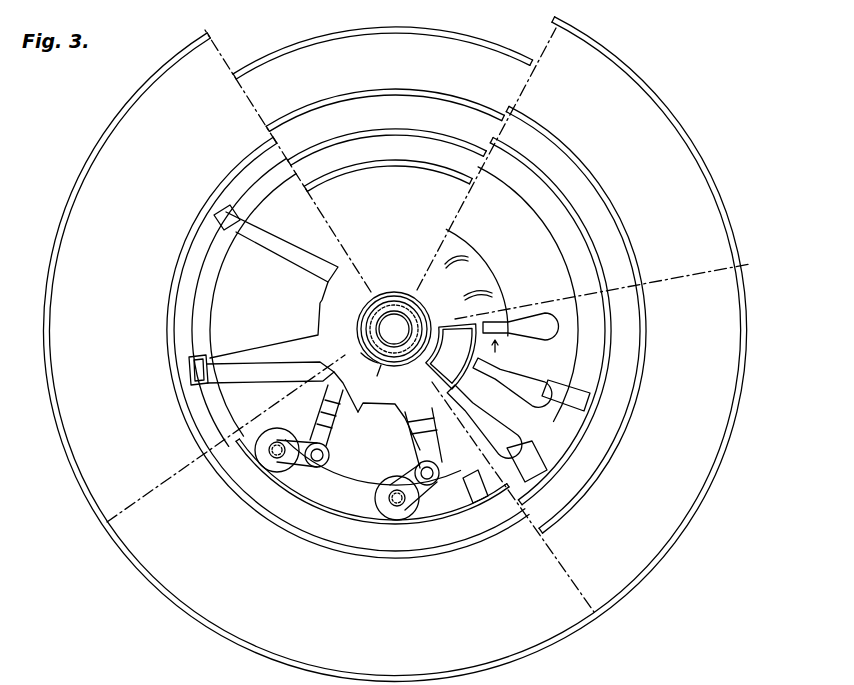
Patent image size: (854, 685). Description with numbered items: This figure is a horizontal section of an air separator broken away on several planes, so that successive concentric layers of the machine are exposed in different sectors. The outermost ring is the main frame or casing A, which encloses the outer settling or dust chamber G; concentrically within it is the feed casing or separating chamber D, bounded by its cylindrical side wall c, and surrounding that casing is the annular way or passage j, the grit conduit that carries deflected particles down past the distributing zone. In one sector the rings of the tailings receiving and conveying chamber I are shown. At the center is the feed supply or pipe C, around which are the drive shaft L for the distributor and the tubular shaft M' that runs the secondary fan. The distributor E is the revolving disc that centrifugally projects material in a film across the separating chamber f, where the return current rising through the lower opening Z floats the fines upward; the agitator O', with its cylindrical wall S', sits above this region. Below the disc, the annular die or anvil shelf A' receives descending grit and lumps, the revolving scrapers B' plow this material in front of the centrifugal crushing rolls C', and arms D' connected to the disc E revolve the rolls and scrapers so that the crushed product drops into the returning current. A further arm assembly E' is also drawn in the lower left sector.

The main frame or casing A is at (395, 349).
The tailings receiving and conveying chamber I is at (382, 125).
The outer settling or dust chamber G is at (589, 294).
The annular way or passage j is at (576, 319).
The cylindrical side wall c is at (574, 441).
The distributor E is at (469, 282).
The agitator O' is at (489, 278).
The feed supply or pipe C is at (394, 329).
The tubular shaft M' is at (360, 370).
The drive shaft for the distributor L is at (399, 357).
The cylindrical wall of the agitator S' is at (456, 358).
The feed casing or separating chamber D is at (521, 338).
The separating chamber f is at (524, 404).
The plate E' is at (274, 281).
The lower opening Z is at (372, 444).
The arms D' is at (376, 426).
The centrifugal crushing rolls C' is at (347, 488).
The annular die or anvil shelf A' is at (372, 493).
The revolving scrapers B' is at (484, 499).